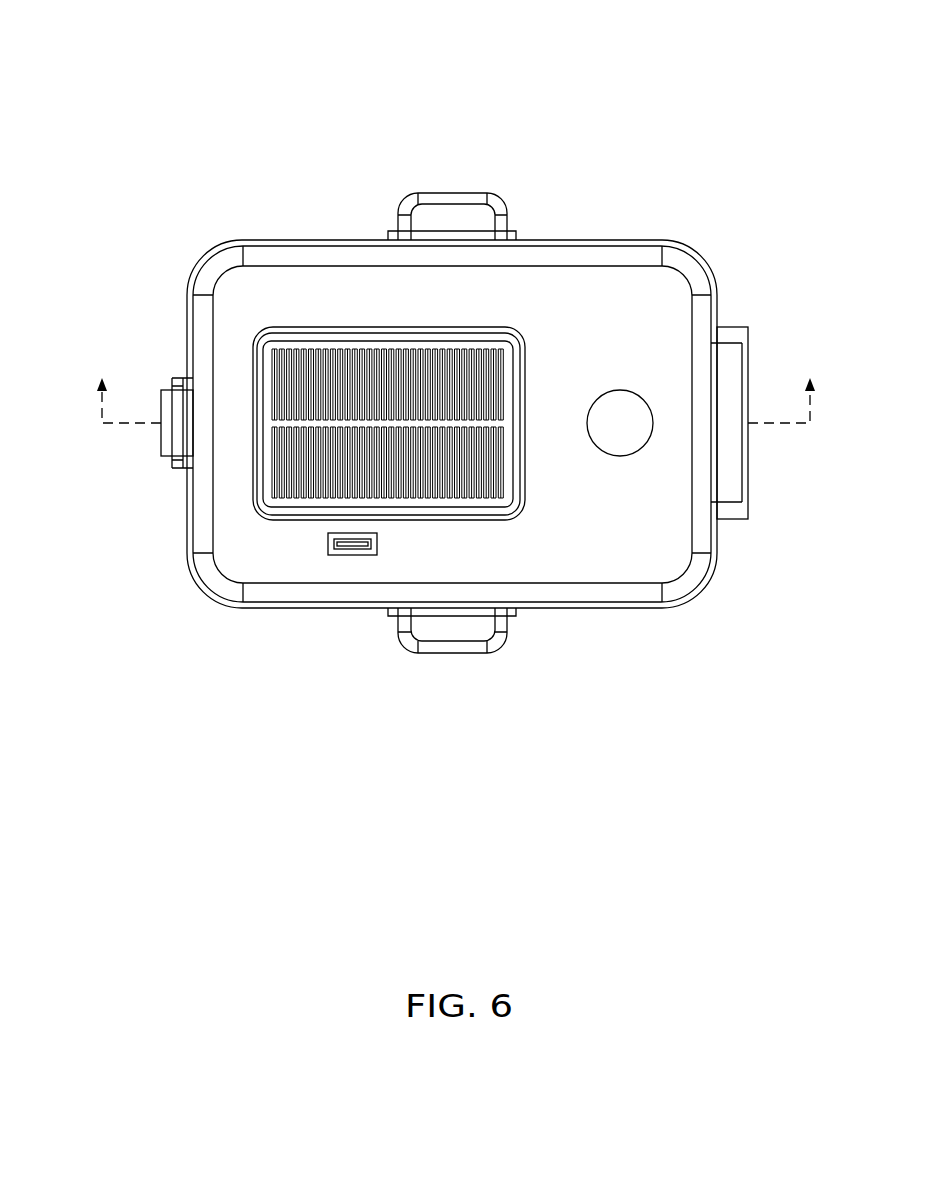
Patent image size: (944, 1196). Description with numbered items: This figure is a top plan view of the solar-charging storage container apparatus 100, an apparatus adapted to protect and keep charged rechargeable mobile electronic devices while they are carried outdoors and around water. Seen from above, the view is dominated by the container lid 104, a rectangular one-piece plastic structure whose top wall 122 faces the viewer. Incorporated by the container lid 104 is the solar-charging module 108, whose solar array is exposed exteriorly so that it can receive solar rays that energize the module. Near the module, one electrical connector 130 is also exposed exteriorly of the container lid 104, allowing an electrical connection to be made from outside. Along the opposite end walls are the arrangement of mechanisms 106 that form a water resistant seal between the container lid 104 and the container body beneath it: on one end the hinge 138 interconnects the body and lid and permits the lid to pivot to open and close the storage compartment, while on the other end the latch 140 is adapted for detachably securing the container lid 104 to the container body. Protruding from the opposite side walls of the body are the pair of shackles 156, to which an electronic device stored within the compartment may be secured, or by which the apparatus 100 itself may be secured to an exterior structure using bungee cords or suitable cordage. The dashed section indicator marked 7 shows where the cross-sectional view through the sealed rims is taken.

The solar-charging storage container apparatus 100 is at (123, 84).
The container lid 104 is at (599, 234).
The arrangement of mechanisms 106 is at (752, 312).
The solar-charging module 108 is at (532, 384).
The top wall 122 is at (590, 544).
The electrical connector 130 is at (333, 557).
The hinge 138 is at (718, 543).
The latch 140 is at (160, 445).
The shackles 156 is at (435, 192).
The section line 7- 7 is at (456, 389).